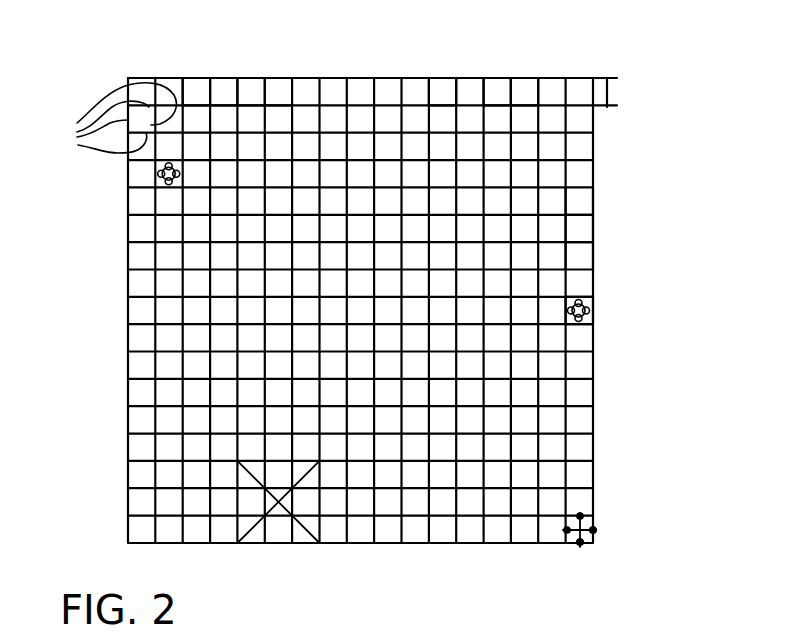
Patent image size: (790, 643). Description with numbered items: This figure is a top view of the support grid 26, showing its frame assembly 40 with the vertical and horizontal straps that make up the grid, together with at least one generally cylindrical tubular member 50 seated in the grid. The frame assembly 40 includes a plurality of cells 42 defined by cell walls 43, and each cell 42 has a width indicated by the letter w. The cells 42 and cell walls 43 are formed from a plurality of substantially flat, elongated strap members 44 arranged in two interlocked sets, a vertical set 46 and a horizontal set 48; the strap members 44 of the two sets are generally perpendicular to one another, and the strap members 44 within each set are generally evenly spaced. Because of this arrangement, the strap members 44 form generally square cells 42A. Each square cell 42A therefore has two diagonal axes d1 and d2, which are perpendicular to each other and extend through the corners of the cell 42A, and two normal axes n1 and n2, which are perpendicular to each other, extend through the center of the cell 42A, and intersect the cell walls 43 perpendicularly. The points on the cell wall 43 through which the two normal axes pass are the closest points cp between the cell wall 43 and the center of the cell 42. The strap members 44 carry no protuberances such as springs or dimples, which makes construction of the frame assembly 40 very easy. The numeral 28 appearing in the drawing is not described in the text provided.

The support grid 26 is at (138, 72).
The frame assembly 40 is at (333, 78).
The cell 42 is at (499, 92).
The square cell 42A is at (528, 91).
The cell wall 43 is at (105, 120).
The strap member 44 is at (260, 100).
The vertical set 46 is at (455, 90).
The horizontal set 48 is at (580, 240).
The tubular member 50 is at (584, 307).
The node cell 28 is at (590, 315).
The width w is at (610, 92).
The closest point cp is at (596, 530).
The normal axis n1 is at (596, 530).
The normal axis n2 is at (582, 563).
The diagonal axis d1 is at (237, 543).
The diagonal axis d2 is at (320, 543).